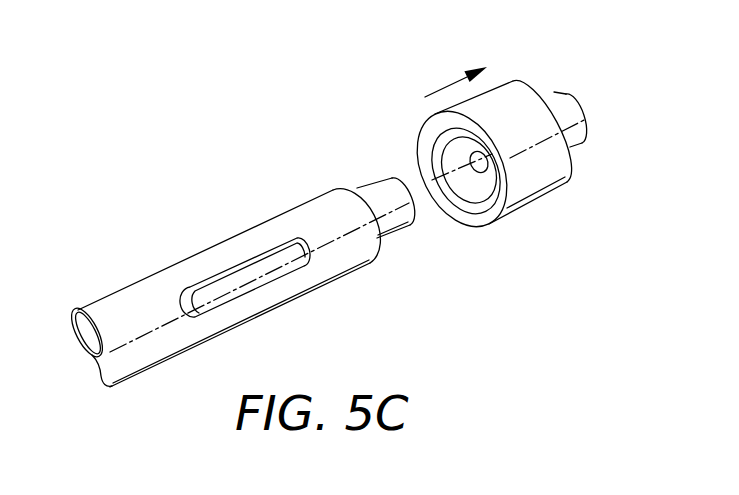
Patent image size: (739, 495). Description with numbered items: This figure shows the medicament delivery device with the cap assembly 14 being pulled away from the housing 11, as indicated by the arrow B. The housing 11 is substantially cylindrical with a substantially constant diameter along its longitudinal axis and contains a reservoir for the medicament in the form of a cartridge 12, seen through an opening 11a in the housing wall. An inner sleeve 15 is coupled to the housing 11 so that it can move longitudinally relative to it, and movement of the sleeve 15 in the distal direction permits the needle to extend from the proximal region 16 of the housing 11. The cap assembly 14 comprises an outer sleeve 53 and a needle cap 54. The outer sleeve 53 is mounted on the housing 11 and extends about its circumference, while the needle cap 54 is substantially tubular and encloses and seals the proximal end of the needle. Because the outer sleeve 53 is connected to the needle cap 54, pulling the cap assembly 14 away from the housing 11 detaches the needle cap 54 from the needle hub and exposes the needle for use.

The housing 11 is at (155, 273).
The slot wall of tube 11a is at (225, 287).
The cartridge 12 is at (262, 257).
The cap assembly 14 is at (525, 229).
The inner sleeve 15 is at (373, 182).
The proximal region 16 is at (91, 254).
The outer sleeve 53 is at (553, 192).
The needle cap 54 is at (560, 93).